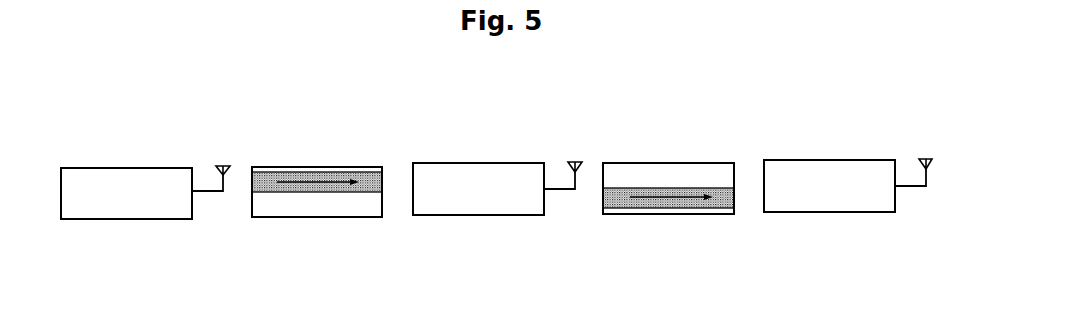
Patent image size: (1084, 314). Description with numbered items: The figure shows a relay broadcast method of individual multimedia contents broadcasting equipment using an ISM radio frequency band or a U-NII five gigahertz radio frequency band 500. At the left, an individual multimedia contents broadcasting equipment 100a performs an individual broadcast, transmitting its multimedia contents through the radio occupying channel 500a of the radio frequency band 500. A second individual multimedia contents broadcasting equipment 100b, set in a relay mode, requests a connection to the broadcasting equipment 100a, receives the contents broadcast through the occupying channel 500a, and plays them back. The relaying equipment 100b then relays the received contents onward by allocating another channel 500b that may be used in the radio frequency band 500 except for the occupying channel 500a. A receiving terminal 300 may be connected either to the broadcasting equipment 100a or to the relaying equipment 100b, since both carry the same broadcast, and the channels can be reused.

The individual multimedia contents broadcasting equipment 100a is at (122, 168).
The individual multimedia contents broadcasting equipment 100b is at (472, 164).
The receiving terminal 300 is at (824, 161).
The ISM radio frequency band or U-NII 5 GHz radio frequency band 500 is at (317, 189).
The radio occupying channel 500a is at (312, 194).
The channel 500b is at (662, 210).